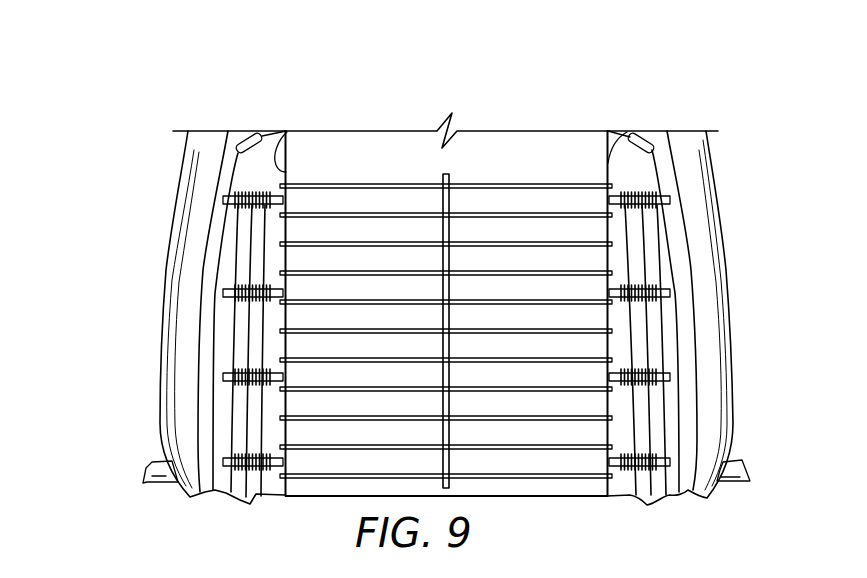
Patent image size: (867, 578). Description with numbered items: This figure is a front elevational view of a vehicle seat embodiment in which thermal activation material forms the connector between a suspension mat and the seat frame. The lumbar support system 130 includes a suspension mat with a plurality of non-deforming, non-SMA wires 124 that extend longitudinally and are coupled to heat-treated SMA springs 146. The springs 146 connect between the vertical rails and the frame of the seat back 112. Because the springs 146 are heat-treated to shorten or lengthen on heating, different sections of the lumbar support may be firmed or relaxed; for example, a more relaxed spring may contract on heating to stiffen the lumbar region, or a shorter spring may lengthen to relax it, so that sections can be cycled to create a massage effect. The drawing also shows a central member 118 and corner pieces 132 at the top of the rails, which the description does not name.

The lumbar support system 130 is at (124, 101).
The seat back 112 is at (166, 164).
The central support bar 118 is at (467, 172).
The non-deforming wires 124 is at (322, 300).
The corner bracket tab 132 is at (282, 168).
The springs 146 is at (672, 202).